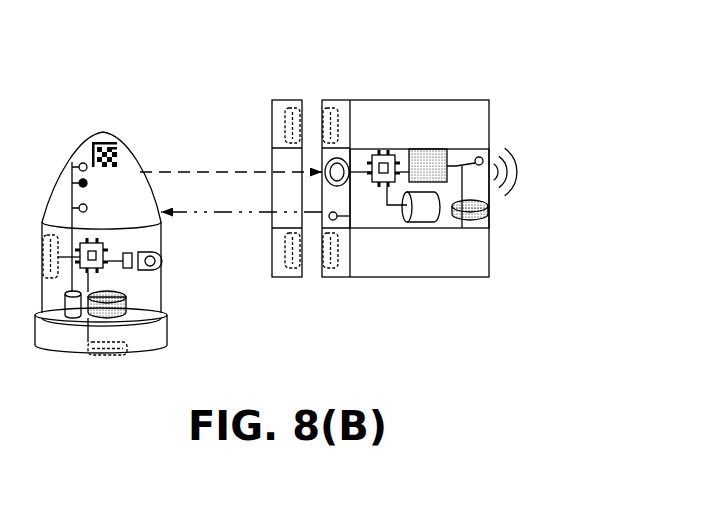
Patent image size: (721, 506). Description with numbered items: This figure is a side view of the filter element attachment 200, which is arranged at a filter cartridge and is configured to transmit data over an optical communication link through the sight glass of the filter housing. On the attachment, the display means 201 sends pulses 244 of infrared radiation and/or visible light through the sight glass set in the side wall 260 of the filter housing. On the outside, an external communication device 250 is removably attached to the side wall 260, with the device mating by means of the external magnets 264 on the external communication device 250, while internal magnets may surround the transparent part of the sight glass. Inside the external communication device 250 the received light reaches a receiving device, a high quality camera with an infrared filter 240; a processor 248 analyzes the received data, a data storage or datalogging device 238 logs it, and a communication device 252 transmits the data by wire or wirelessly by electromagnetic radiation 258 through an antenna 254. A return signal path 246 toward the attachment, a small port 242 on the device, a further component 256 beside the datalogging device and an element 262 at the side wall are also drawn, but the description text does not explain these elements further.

The filter element attachment 200 is at (25, 267).
The display means 201 is at (82, 162).
The data storage or datalogging device 238 is at (431, 230).
The camera with an infrared filter 240 is at (343, 161).
The sensor port 242 is at (341, 221).
The pulses 244 is at (220, 165).
The return signal 246 is at (196, 220).
The processor 248 is at (391, 152).
The external communication device 250 is at (343, 98).
The communication device 252 is at (434, 153).
The antenna 254 is at (483, 154).
The power supply 256 is at (479, 232).
The electromagnetic radiation 258 is at (508, 190).
The side wall 260 is at (270, 98).
The power input 262 is at (292, 279).
The external magnets 264 is at (328, 279).